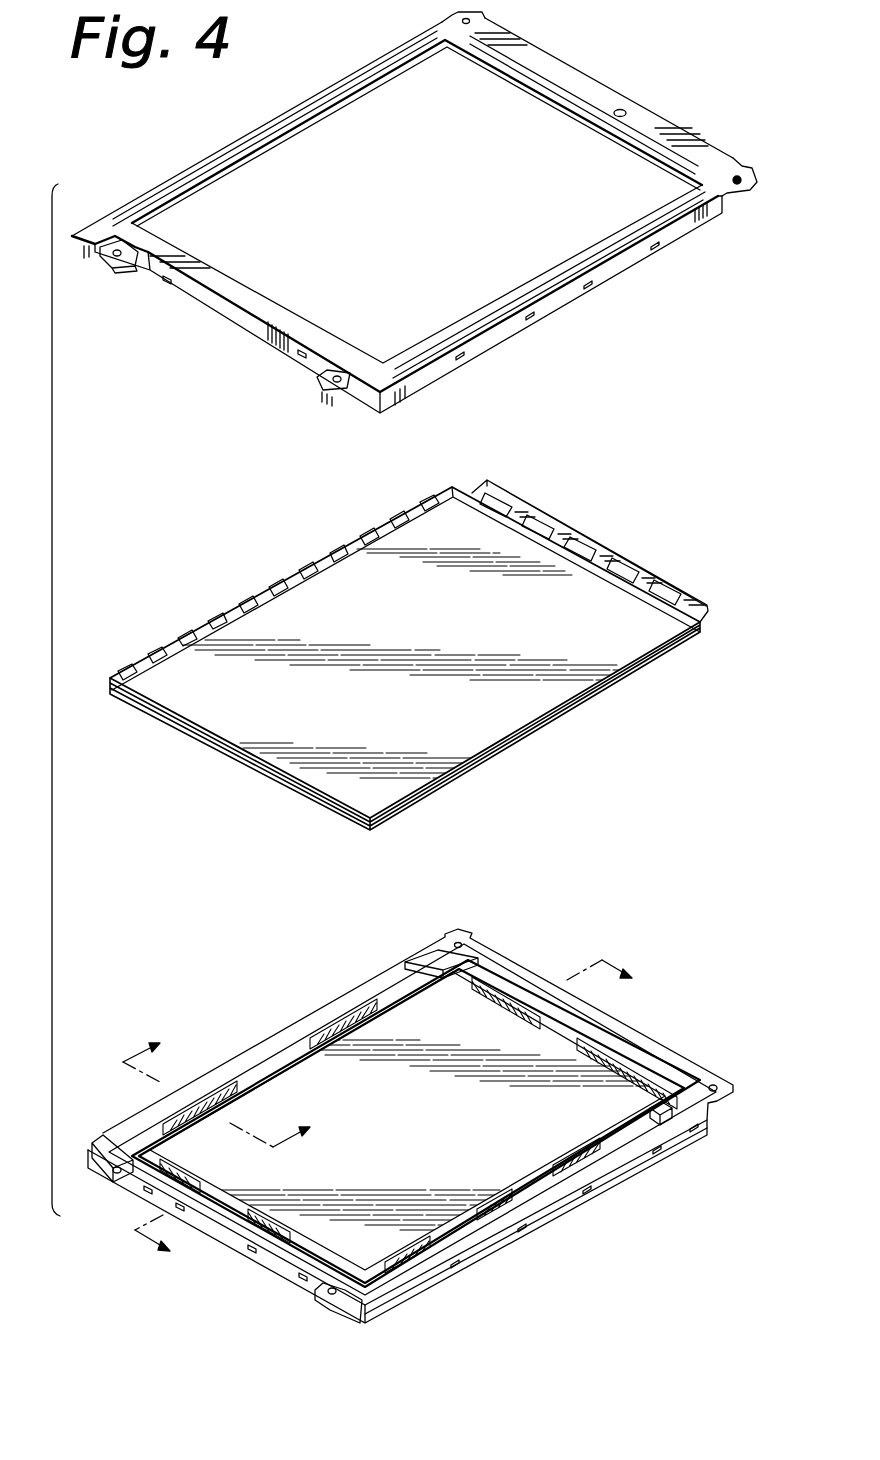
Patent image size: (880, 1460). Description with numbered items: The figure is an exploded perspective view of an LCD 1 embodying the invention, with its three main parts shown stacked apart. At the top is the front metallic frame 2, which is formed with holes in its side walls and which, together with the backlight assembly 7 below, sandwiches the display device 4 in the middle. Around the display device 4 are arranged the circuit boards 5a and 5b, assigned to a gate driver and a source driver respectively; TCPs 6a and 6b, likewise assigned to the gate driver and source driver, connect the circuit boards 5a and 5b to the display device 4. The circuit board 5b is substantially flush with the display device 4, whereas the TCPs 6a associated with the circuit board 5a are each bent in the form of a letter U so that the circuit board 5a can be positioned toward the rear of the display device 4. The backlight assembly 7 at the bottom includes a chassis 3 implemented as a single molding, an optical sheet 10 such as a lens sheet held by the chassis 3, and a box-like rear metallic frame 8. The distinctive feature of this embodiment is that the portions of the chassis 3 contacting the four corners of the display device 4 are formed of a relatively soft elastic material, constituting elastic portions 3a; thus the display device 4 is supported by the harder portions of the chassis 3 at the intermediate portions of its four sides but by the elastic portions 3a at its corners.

The LCD 1 is at (50, 684).
The front metallic frame 2 is at (647, 122).
The chassis 3 is at (523, 965).
The elastic portions 3a is at (235, 1085).
The display device 4 is at (547, 698).
The circuit board 5a is at (143, 717).
The circuit board 5b is at (655, 585).
The TCPs 6a is at (260, 598).
The TCPs 6b is at (543, 532).
The backlight assembly 7 is at (679, 1023).
The rear metallic frame 8 is at (558, 1207).
The optical sheet 10 is at (560, 1127).